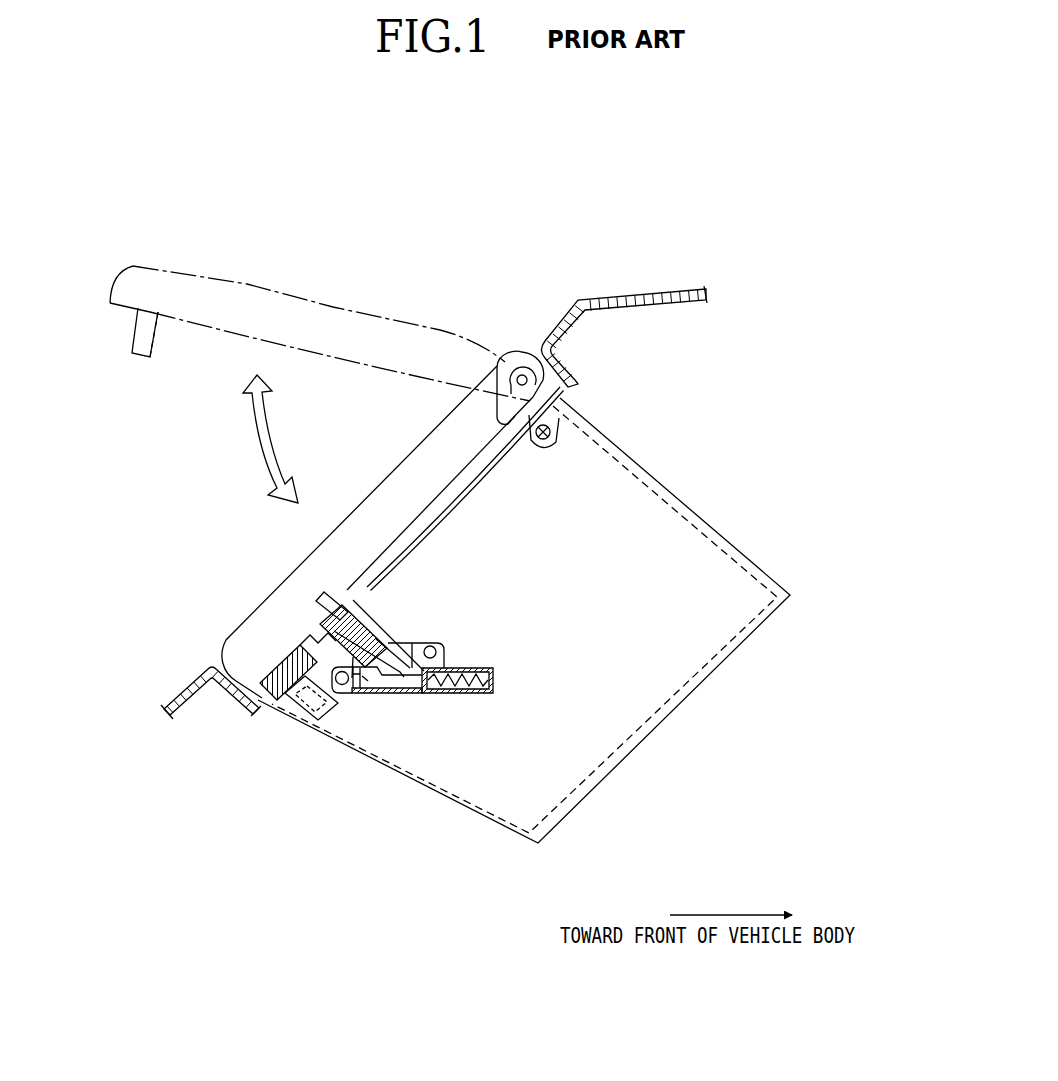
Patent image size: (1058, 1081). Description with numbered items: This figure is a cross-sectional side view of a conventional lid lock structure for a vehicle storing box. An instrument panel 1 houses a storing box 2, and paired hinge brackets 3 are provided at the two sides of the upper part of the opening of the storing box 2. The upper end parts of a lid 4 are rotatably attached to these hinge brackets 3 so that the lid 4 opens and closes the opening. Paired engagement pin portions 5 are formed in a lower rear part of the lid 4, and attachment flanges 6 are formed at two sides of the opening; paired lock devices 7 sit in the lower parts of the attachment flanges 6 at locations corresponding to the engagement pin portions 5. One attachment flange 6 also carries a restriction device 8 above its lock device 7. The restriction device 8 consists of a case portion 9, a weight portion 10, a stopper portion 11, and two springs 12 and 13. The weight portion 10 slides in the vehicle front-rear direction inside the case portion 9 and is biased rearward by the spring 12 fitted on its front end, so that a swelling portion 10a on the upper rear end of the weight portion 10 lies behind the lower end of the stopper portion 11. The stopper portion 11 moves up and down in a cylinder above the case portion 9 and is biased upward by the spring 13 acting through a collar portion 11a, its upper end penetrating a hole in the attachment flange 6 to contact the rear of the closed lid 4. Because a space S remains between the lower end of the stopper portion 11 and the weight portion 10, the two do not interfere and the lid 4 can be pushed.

The instrument panel 1 is at (615, 303).
The storing box 2 is at (702, 479).
The hinge bracket 3 is at (512, 386).
The lid 4 is at (284, 585).
The engagement pin portion 5 is at (268, 660).
The attachment flange 6 is at (335, 628).
The lock device 7 is at (311, 706).
The restriction device 8 is at (416, 714).
The case portion 9 is at (387, 699).
The weight portion 10 is at (428, 692).
The swelling portion 10a is at (366, 680).
The stopper portion 11 is at (385, 645).
The collar portion 11a is at (334, 602).
The spring 12 is at (480, 693).
The spring 13 is at (373, 613).
The space S is at (446, 645).